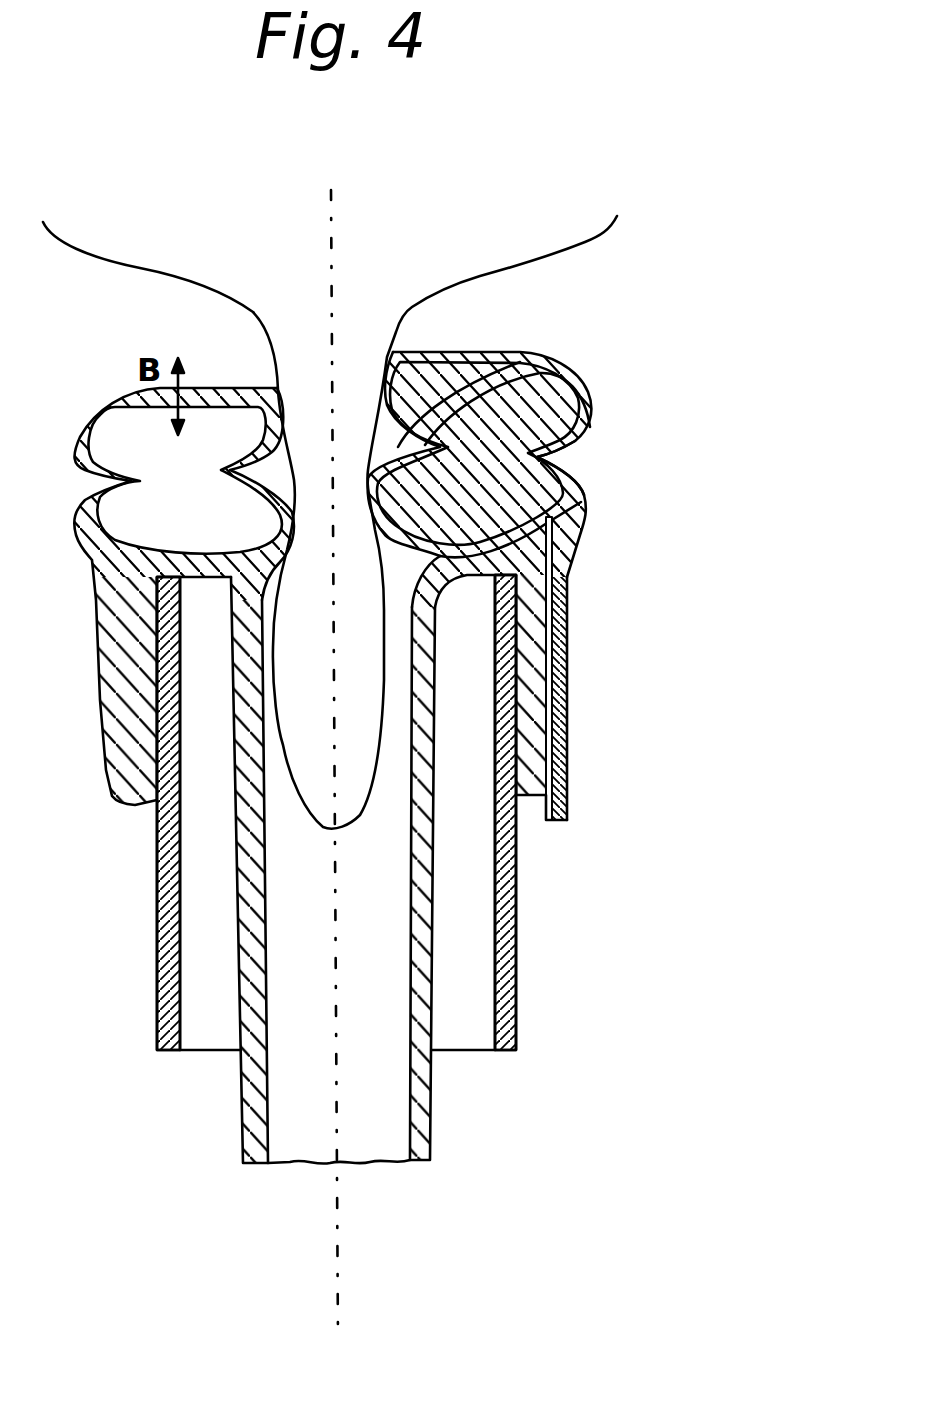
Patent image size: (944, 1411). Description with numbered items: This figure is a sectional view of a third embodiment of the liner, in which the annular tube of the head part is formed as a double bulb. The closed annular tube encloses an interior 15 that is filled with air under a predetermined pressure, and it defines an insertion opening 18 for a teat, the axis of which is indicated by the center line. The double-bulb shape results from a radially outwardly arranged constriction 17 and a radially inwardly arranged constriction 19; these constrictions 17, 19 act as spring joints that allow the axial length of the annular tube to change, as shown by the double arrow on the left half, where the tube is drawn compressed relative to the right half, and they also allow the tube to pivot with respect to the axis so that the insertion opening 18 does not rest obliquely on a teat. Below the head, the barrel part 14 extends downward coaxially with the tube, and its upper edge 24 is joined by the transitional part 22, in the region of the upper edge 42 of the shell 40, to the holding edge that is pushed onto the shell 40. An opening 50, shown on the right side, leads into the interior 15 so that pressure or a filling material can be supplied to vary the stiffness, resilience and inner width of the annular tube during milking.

The barrel part 14 is at (432, 985).
The interior 15 is at (488, 476).
The constriction 17 is at (548, 458).
The insertion opening 18 is at (410, 353).
The constriction 19 is at (555, 368).
The transitional part 22 is at (535, 542).
The upper edge 24 is at (420, 659).
The shell 40 is at (515, 1025).
The upper edge 42 is at (572, 575).
The opening 50 is at (560, 823).